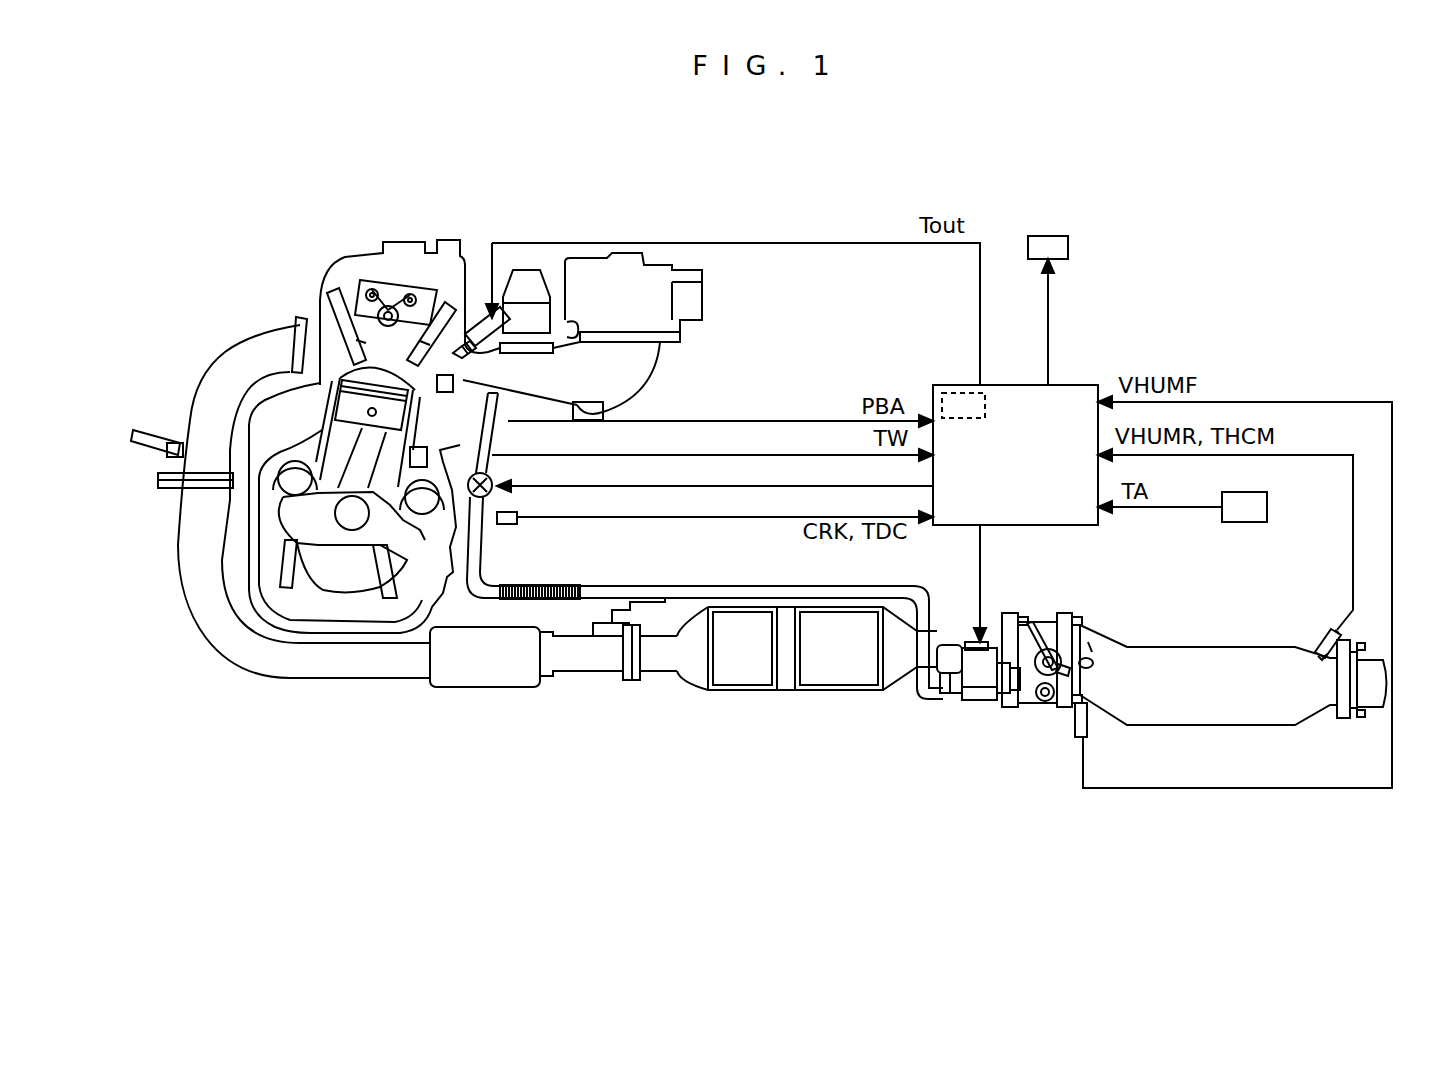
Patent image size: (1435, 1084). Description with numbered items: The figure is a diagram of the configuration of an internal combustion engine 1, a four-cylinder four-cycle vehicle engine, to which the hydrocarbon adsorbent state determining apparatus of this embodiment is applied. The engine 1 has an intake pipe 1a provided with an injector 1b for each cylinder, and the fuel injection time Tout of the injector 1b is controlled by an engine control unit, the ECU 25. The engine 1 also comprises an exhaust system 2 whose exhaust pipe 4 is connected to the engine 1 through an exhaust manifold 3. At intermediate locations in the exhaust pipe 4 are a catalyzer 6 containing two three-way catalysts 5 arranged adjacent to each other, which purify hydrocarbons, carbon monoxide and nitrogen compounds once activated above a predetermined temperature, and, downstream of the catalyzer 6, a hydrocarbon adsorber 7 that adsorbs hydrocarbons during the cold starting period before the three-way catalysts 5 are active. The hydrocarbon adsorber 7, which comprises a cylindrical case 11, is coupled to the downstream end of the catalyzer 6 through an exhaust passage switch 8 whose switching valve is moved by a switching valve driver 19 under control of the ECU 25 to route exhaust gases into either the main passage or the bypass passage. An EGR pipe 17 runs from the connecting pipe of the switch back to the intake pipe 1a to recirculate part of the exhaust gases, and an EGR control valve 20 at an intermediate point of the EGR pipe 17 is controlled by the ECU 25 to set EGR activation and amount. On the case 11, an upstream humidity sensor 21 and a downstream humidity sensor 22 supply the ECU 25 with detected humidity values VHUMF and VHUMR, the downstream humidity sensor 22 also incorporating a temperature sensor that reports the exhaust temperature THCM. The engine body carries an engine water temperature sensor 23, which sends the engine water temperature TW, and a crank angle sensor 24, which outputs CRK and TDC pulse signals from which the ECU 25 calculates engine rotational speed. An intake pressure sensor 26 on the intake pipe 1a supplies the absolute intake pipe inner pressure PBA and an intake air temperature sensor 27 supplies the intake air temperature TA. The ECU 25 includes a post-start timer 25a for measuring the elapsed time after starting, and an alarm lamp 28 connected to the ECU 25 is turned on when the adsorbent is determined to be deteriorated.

The internal combustion engine 1 is at (365, 222).
The intake pipe 1a is at (552, 383).
The injector 1b is at (491, 243).
The exhaust system 2 is at (351, 741).
The exhaust manifold 3 is at (303, 327).
The exhaust pipe 4 is at (248, 676).
The three-way catalysts 5 is at (817, 680).
The catalyzer 6 is at (708, 718).
The hydrocarbon adsorber 7 is at (1188, 623).
The exhaust passage switch 8 is at (1042, 613).
The cylindrical case 11 is at (1233, 647).
The EGR pipe 17 is at (935, 702).
The switching valve driver 19 is at (987, 705).
The EGR control valve 20 is at (497, 492).
The upstream humidity sensor 21 is at (1078, 738).
The downstream humidity sensor 22 is at (1335, 708).
The engine water temperature sensor 23 is at (338, 410).
The crank angle sensor 24 is at (513, 527).
The engine control unit (ECU) 25 is at (1085, 385).
The post-start timer 25a is at (957, 388).
The intake pressure sensor 26 is at (455, 384).
The intake air temperature sensor 27 is at (1265, 523).
The alarm lamp 28 is at (1050, 236).